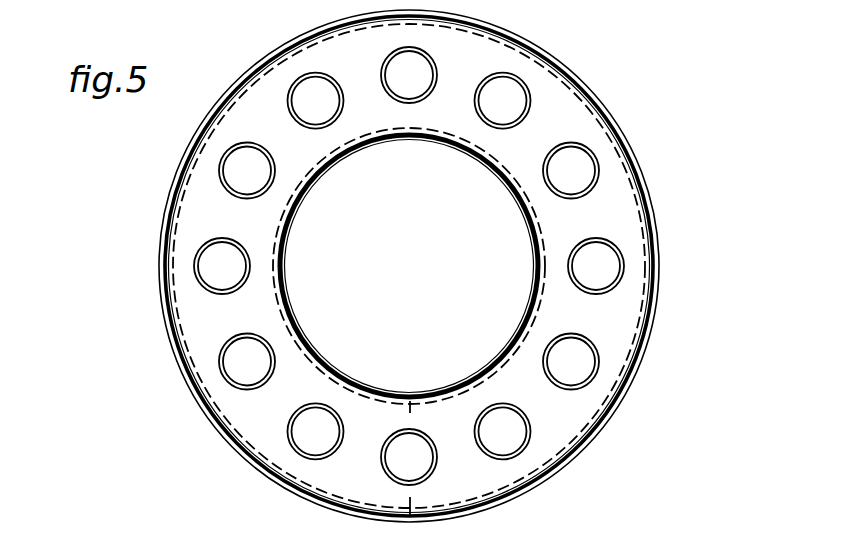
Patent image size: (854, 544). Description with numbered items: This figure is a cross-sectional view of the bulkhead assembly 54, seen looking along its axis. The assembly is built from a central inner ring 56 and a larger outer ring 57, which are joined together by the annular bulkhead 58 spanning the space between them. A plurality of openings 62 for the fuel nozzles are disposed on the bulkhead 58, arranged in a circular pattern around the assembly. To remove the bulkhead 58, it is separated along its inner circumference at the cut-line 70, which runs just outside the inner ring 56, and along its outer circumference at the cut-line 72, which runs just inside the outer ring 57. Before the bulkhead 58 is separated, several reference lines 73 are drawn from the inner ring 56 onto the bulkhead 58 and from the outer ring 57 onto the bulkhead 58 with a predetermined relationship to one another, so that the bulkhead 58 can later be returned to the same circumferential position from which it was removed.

The bulkhead assembly 54 is at (657, 93).
The inner ring 56 is at (283, 209).
The outer ring 57 is at (194, 174).
The bulkhead 58 is at (472, 73).
The openings 62 is at (208, 283).
The cut-line 70 is at (364, 133).
The cut-line 72 is at (253, 86).
The reference lines 73 is at (411, 407).